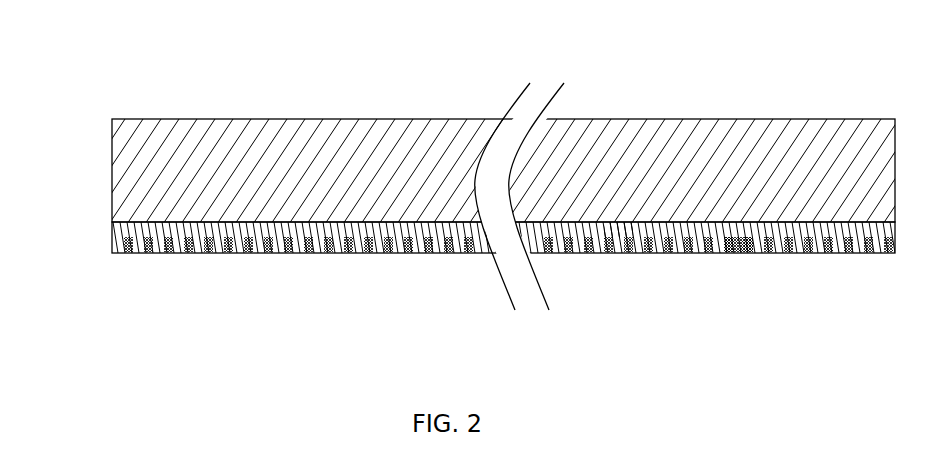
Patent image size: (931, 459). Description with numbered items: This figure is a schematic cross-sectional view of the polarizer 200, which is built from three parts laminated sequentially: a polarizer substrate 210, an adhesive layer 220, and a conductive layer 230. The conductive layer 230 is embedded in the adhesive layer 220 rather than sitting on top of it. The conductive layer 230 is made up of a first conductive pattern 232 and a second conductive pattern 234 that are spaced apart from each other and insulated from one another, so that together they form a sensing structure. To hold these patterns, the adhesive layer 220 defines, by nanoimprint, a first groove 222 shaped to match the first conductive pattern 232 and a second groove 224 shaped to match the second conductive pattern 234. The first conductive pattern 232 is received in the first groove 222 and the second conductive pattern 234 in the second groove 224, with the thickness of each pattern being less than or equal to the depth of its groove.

The polarizer 200 is at (449, 202).
The polarizer substrate 210 is at (112, 180).
The adhesive layer 220 is at (449, 300).
The first groove 222 is at (635, 235).
The second groove 224 is at (738, 235).
The conductive layer 230 is at (286, 317).
The first conductive pattern 232 is at (248, 253).
The second conductive pattern 234 is at (359, 297).